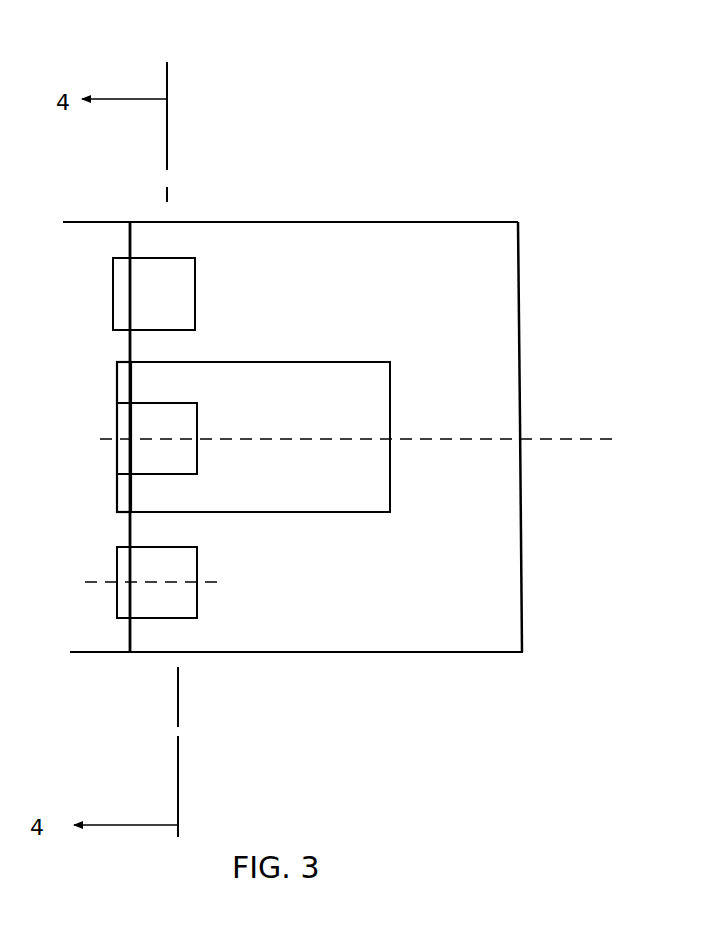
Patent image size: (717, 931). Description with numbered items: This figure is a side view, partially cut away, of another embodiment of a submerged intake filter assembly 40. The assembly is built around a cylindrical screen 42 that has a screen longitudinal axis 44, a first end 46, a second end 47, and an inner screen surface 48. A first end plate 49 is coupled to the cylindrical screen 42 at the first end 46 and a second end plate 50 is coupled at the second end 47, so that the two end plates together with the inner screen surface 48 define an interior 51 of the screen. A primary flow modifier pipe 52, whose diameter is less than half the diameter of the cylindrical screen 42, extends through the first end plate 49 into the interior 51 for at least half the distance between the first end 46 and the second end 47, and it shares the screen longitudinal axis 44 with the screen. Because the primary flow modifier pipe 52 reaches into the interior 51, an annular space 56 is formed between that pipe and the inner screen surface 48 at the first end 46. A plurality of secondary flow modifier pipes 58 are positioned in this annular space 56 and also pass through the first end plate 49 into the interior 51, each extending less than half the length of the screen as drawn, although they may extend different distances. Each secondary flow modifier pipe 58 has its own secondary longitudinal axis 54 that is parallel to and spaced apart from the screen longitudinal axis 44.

The submerged intake filter assembly 40 is at (259, 91).
The cylindrical screen 42 is at (341, 218).
The screen longitudinal axis 44 is at (626, 435).
The first end 46 is at (130, 657).
The second end 47 is at (523, 654).
The inner screen surface 48 is at (416, 643).
The first end plate 49 is at (129, 529).
The second end plate 50 is at (524, 497).
The interior 51 is at (494, 260).
The primary flow modifier pipe 52 is at (397, 377).
The secondary longitudinal axis 54 is at (99, 578).
The annular space 56 is at (134, 351).
The secondary flow modifier pipes 58 is at (185, 626).